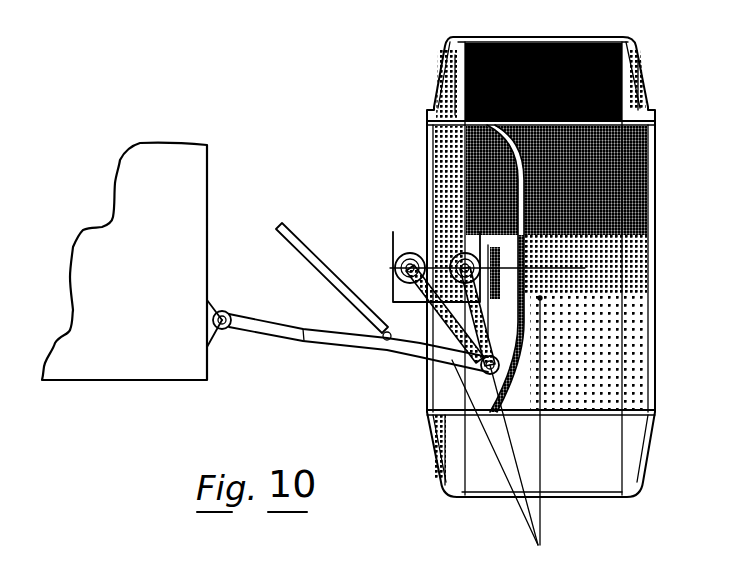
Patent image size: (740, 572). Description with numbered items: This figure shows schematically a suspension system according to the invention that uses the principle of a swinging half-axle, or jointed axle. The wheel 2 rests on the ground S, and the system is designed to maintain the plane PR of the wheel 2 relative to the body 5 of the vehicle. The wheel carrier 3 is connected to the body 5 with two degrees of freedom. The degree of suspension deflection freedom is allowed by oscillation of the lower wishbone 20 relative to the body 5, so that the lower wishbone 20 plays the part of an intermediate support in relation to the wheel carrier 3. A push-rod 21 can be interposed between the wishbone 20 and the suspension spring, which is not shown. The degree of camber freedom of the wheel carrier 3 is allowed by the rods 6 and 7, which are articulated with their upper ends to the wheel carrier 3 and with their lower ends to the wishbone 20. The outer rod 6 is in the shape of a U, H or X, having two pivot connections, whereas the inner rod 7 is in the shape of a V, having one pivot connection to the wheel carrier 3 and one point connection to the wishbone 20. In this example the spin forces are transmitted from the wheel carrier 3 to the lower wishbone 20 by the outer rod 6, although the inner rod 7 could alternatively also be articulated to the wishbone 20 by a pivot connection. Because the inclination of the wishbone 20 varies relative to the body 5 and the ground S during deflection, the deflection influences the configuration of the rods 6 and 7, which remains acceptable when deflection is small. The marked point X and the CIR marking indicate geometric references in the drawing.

The wheel 2 is at (520, 181).
The wheel carrier 3 is at (415, 243).
The body 5 is at (158, 313).
The outer rod 6 is at (488, 343).
The inner rod 7 is at (402, 315).
The lower wishbone 20 is at (318, 338).
The push-rod 21 is at (282, 236).
The plane of the wheel PR is at (541, 511).
The center of rotation line CIR is at (489, 462).
The ground S is at (510, 532).
The intersection point X is at (535, 554).